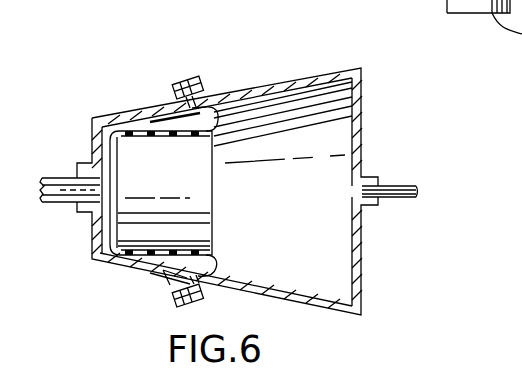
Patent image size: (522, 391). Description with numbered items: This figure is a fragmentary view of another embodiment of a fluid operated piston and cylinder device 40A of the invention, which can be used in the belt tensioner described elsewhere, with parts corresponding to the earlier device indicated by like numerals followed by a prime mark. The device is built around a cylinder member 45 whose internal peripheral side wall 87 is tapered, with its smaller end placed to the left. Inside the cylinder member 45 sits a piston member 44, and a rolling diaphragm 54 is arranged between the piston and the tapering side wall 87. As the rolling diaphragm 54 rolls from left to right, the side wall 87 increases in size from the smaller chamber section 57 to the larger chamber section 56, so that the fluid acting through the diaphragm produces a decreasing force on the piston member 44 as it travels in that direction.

The fluid operated piston and cylinder device 40A is at (249, 72).
The piston member 44 is at (137, 155).
The cylinder member 45 is at (290, 80).
The rolling diaphragm 54 is at (141, 128).
The chamber section 56 is at (328, 258).
The chamber section 57 is at (167, 260).
The internal peripheral side wall 87 is at (305, 292).